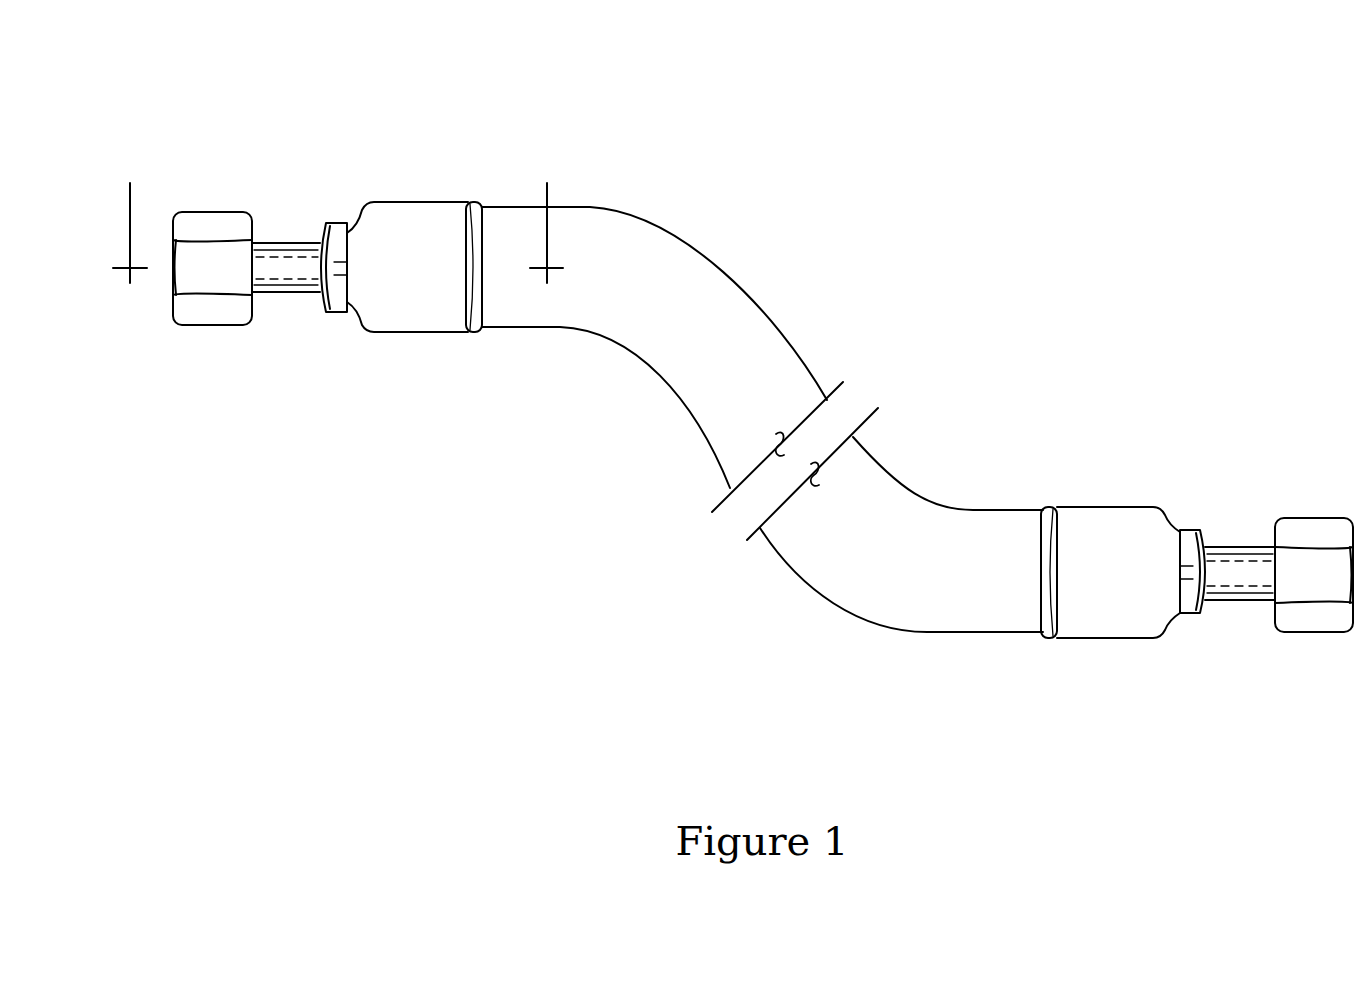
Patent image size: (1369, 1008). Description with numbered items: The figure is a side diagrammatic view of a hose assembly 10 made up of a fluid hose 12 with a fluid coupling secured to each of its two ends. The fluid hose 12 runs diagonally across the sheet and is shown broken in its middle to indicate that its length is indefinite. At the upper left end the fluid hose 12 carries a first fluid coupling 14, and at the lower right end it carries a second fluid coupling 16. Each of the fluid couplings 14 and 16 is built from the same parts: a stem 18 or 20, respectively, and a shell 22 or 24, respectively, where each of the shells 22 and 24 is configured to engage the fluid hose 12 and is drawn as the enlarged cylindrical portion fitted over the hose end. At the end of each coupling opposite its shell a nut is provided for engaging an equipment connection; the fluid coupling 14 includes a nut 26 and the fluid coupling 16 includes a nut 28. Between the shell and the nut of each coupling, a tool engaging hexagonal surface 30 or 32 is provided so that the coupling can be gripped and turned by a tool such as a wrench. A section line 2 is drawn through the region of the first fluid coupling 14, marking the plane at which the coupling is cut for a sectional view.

The section line 2 is at (127, 260).
The hose assembly 10 is at (1220, 116).
The fluid hose 12 is at (783, 328).
The fluid coupling 14 is at (281, 188).
The fluid coupling 16 is at (1254, 481).
The stem 18 is at (282, 248).
The stem 20 is at (1243, 554).
The shell 22 is at (420, 218).
The shell 24 is at (1130, 524).
The nut 26 is at (204, 218).
The nut 28 is at (1318, 525).
The tool engaging hexagonal surface 30 is at (326, 228).
The tool engaging hexagonal surface 32 is at (1190, 530).